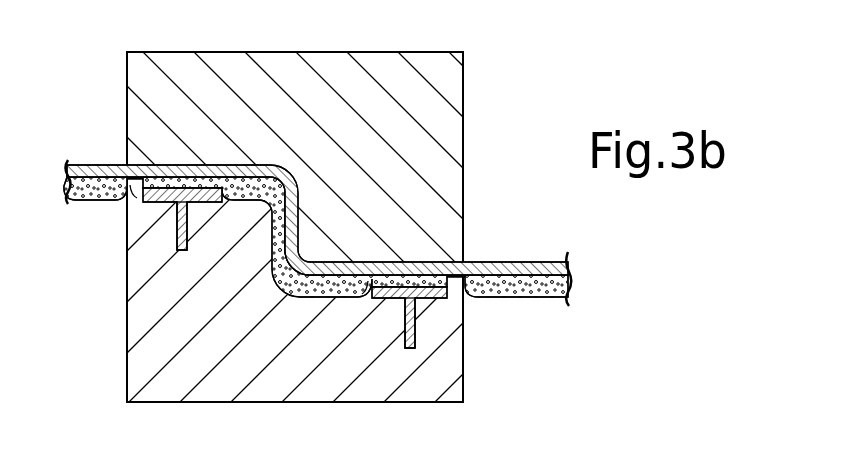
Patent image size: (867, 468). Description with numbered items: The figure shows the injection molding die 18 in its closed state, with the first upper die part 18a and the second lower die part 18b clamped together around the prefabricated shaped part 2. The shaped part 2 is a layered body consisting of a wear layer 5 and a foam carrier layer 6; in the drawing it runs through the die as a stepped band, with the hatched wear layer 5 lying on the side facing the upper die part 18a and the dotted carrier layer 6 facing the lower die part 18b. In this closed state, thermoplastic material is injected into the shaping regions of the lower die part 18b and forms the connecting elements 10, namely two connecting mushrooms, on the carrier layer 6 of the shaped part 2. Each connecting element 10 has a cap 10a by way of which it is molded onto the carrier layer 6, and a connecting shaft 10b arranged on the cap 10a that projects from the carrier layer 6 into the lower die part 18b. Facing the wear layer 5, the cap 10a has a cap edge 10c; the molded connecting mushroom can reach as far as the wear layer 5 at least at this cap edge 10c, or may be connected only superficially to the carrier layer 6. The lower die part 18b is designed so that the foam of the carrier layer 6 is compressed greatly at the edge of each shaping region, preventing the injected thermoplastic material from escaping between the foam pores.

The shaped part 2 is at (294, 235).
The wear layer 5 is at (97, 164).
The carrier layer 6 is at (65, 190).
The connecting element 10 is at (283, 235).
The cap 10a is at (165, 186).
The connecting shaft 10b is at (176, 240).
The cap edge 10c is at (170, 262).
The injection molding die 18 is at (433, 234).
The first upper die part 18a is at (355, 87).
The second lower die part 18b is at (440, 446).